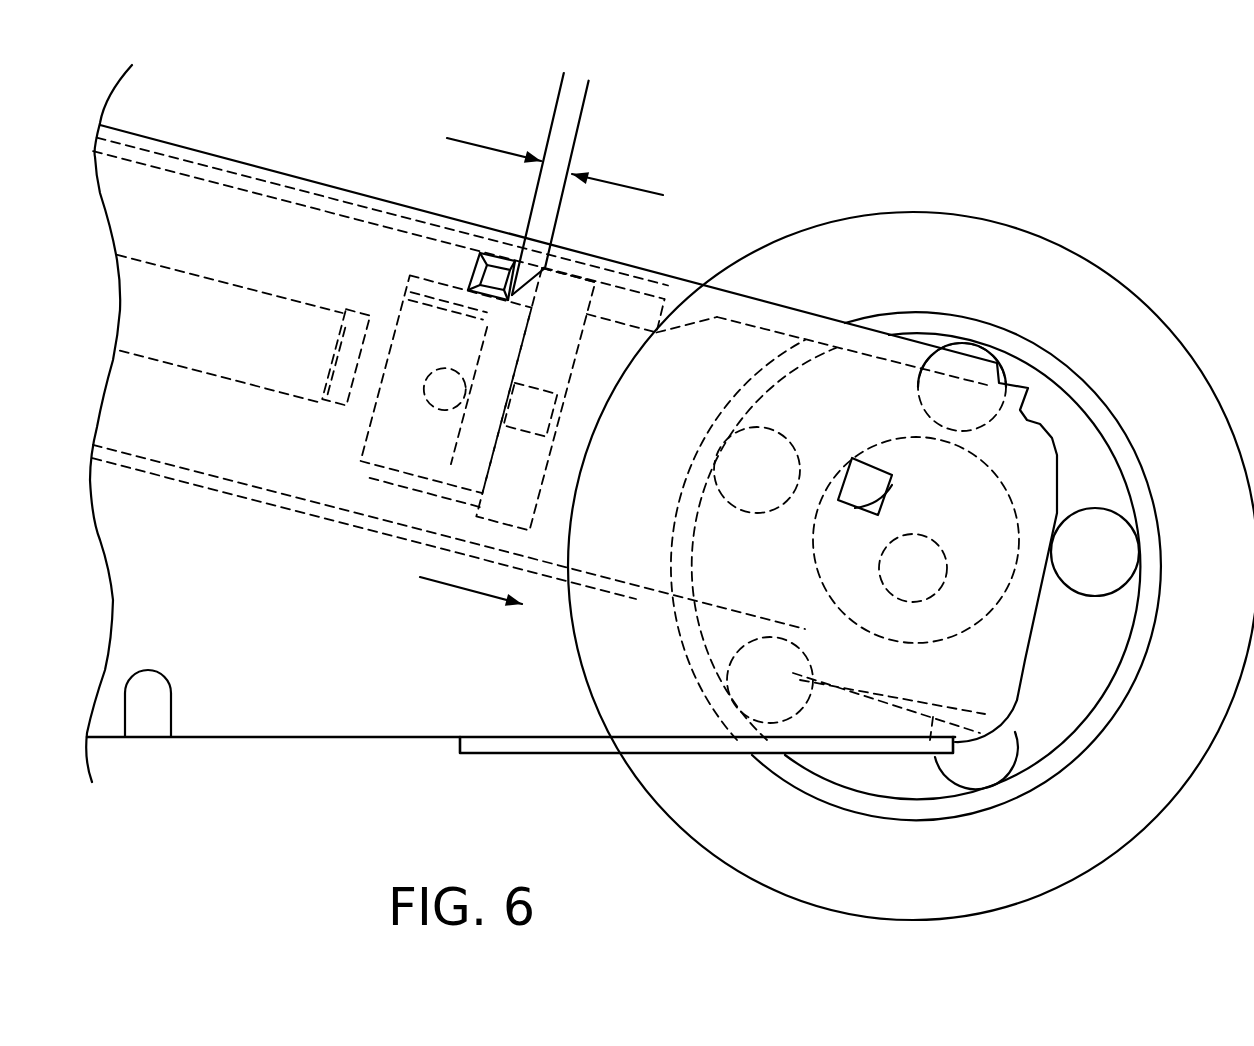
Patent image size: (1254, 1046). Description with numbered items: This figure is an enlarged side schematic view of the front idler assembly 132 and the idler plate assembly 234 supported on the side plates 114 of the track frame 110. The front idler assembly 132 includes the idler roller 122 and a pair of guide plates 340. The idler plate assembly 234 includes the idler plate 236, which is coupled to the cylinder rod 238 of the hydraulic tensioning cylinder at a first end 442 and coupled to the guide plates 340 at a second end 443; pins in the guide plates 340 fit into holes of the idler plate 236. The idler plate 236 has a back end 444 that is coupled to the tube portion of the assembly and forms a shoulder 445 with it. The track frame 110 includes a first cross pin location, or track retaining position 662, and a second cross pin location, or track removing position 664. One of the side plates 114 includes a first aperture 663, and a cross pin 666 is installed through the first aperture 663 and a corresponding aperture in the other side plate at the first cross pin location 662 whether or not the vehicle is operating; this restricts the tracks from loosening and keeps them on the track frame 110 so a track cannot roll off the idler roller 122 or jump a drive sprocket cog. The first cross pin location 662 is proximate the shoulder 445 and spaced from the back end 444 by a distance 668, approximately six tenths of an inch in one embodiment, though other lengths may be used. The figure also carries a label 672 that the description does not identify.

The track frame 110 is at (235, 768).
The side plates 114 is at (355, 710).
The idler roller 122 is at (1112, 313).
The front idler assembly 132 is at (1108, 195).
The idler plate assembly 234 is at (397, 556).
The idler plate 236 is at (577, 292).
The cylinder rod 238 is at (200, 272).
The guide plates 340 is at (1013, 443).
The first end 442 is at (373, 413).
The second end 443 is at (533, 527).
The back end 444 is at (477, 523).
The shoulder 445 is at (533, 303).
The first cross pin location 662 is at (477, 243).
The first aperture 663 is at (542, 270).
The second cross pin location 664 is at (838, 517).
The cross pin 666 is at (493, 273).
The distance 668 is at (610, 178).
The adjustment direction 672 is at (465, 598).